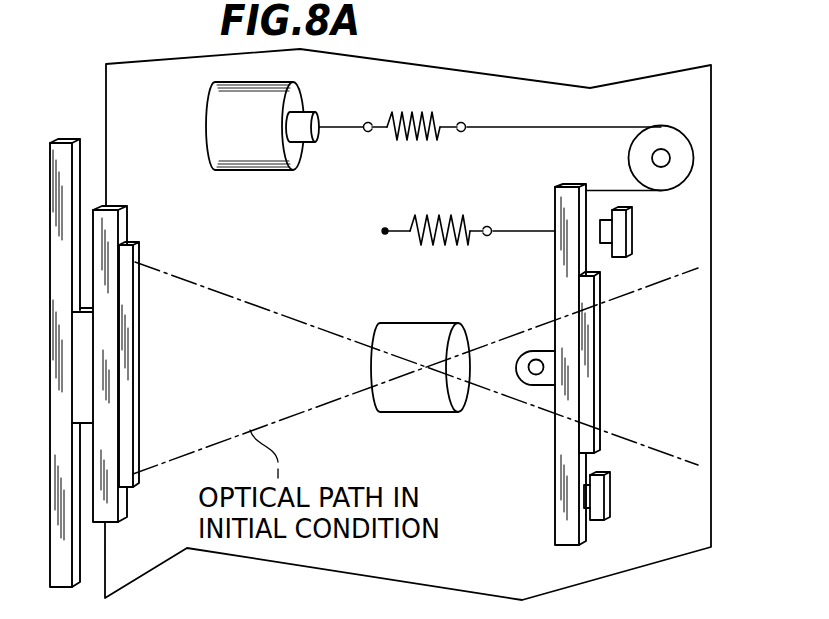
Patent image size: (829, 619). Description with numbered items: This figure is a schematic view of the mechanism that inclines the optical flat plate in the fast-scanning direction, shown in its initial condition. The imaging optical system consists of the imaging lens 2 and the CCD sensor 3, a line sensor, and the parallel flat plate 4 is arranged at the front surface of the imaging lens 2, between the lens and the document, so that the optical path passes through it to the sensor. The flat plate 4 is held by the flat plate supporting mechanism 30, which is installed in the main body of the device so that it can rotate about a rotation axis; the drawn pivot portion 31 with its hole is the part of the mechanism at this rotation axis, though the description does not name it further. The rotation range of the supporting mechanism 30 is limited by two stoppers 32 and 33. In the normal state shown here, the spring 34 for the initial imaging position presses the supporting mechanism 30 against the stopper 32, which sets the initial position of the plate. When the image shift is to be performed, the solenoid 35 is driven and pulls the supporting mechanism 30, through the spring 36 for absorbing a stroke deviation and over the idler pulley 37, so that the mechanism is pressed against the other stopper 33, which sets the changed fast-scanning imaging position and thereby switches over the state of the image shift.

The imaging lens 2 is at (440, 413).
The CCD sensor 3 is at (130, 512).
The optical flat plate 4 is at (600, 366).
The flat plate supporting mechanism 30 is at (555, 523).
The bracket with hole 31 is at (534, 376).
The stopper 32 is at (610, 497).
The stopper 33 is at (632, 231).
The spring for an initial imaging position 34 is at (437, 217).
The solenoid 35 is at (206, 140).
The spring for absorbing a stroke deviation 36 is at (395, 117).
The idler pulley 37 is at (688, 110).